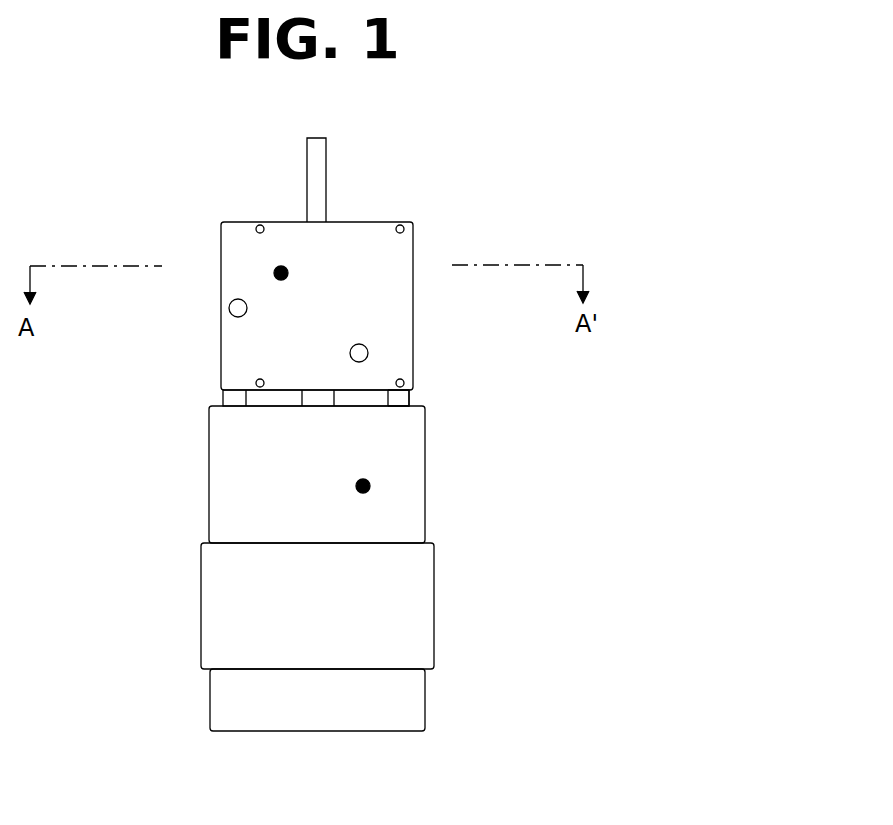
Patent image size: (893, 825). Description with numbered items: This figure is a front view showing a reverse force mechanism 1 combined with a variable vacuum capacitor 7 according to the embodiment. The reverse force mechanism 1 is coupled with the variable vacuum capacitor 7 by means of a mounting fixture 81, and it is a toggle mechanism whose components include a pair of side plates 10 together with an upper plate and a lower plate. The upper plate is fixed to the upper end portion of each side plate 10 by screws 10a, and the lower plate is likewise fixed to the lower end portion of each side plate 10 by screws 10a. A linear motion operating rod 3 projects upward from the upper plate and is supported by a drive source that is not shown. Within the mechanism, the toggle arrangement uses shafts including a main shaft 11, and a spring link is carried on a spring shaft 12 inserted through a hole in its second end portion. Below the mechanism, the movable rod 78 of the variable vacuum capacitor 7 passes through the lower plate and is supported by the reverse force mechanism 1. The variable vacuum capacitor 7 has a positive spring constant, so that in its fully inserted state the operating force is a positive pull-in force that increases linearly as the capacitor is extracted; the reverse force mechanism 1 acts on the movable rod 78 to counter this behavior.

The reverse force mechanism 1 is at (274, 273).
The linear motion operating rod 3 is at (326, 178).
The variable vacuum capacitor 7 is at (372, 486).
The side plate 10 is at (413, 273).
The screw 10a is at (413, 222).
The main shaft 11 is at (368, 352).
The spring shaft 12 is at (229, 306).
The movable rod 78 is at (300, 398).
The mounting fixture 81 is at (410, 398).